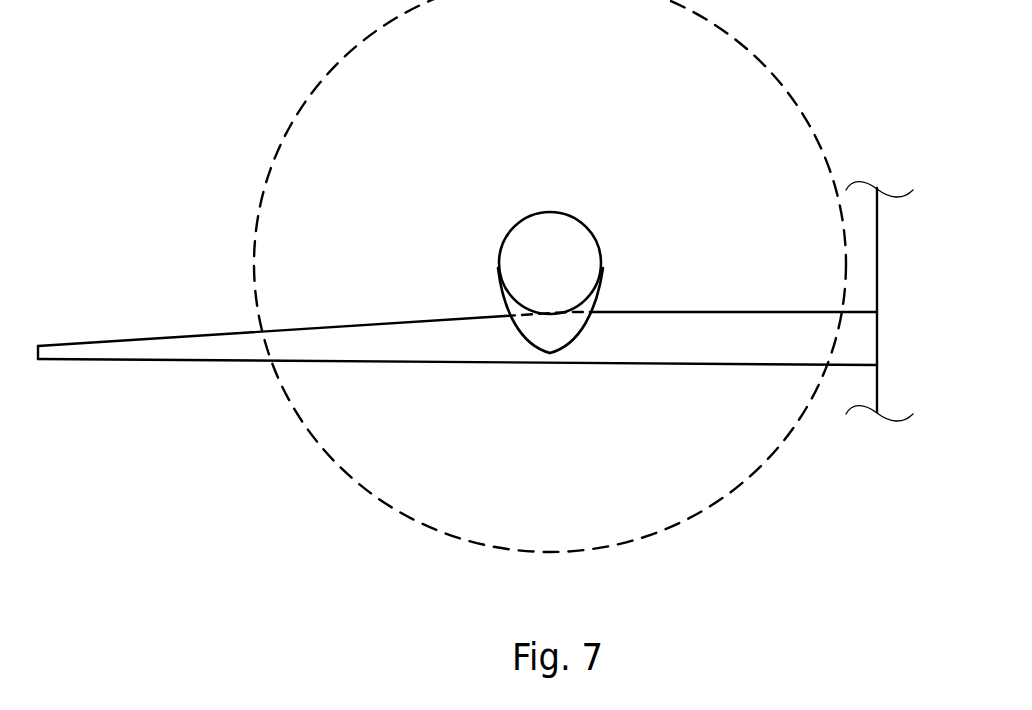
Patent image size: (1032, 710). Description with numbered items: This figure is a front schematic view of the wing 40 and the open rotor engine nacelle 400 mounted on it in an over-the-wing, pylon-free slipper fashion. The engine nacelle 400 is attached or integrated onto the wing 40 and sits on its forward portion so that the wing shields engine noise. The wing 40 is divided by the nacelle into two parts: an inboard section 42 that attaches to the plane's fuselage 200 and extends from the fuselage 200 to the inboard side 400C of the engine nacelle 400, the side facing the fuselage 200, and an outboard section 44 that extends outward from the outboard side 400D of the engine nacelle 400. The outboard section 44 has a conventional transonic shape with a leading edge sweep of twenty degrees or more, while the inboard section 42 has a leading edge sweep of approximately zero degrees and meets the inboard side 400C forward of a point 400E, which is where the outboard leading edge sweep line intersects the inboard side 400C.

The wing 40 is at (457, 331).
The inboard section 42 is at (780, 350).
The outboard section 44 is at (240, 350).
The fuselage 200 is at (877, 253).
The engine nacelle 400 is at (553, 212).
The inboard side 400C is at (595, 308).
The outboard side 400D is at (508, 316).
The point 400E is at (598, 311).